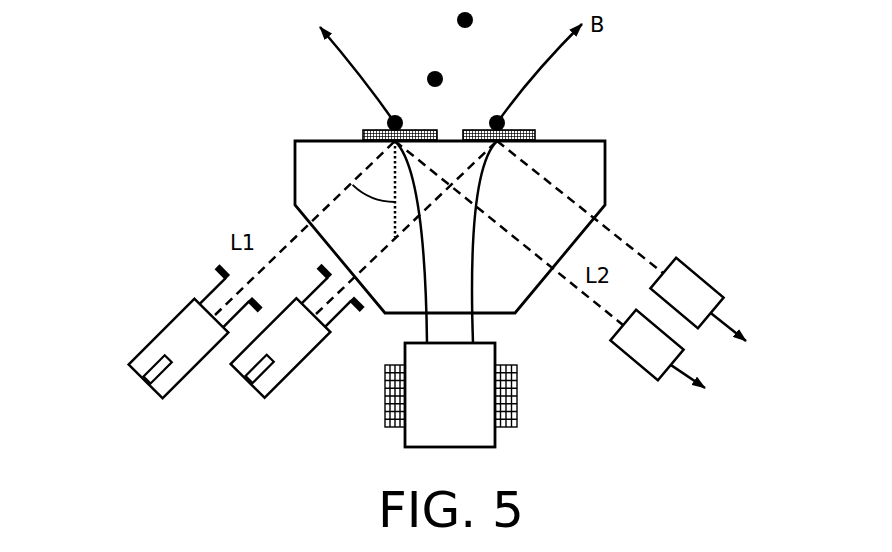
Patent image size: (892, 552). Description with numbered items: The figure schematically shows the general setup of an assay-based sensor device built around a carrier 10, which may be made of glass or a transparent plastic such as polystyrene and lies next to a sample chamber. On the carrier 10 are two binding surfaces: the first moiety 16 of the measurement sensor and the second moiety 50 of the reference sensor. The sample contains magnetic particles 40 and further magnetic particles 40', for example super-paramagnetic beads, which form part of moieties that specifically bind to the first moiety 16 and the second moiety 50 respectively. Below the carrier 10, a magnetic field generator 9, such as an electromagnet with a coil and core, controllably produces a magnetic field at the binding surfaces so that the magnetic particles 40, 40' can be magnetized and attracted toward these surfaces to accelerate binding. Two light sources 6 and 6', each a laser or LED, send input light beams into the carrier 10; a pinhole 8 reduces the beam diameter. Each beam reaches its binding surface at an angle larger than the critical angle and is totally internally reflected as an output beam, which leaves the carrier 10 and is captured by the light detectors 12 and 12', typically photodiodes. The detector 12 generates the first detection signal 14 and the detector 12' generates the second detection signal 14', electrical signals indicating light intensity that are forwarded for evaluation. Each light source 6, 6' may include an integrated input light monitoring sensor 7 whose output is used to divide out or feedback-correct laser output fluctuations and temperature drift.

The light source 6 is at (175, 354).
The light source 6' is at (279, 350).
The input light monitoring sensor 7 is at (145, 360).
The pinhole 8 is at (222, 276).
The magnetic field generator 9 is at (405, 432).
The carrier 10 is at (295, 173).
The light detector 12 is at (632, 362).
The light detector 12' is at (701, 269).
The first detection signal 14 is at (705, 389).
The second detection signal 14' is at (748, 339).
The first moiety 16 is at (363, 136).
The magnetic particles 40 is at (367, 79).
The further magnetic particles 40' is at (530, 77).
The second moiety 50 is at (535, 136).